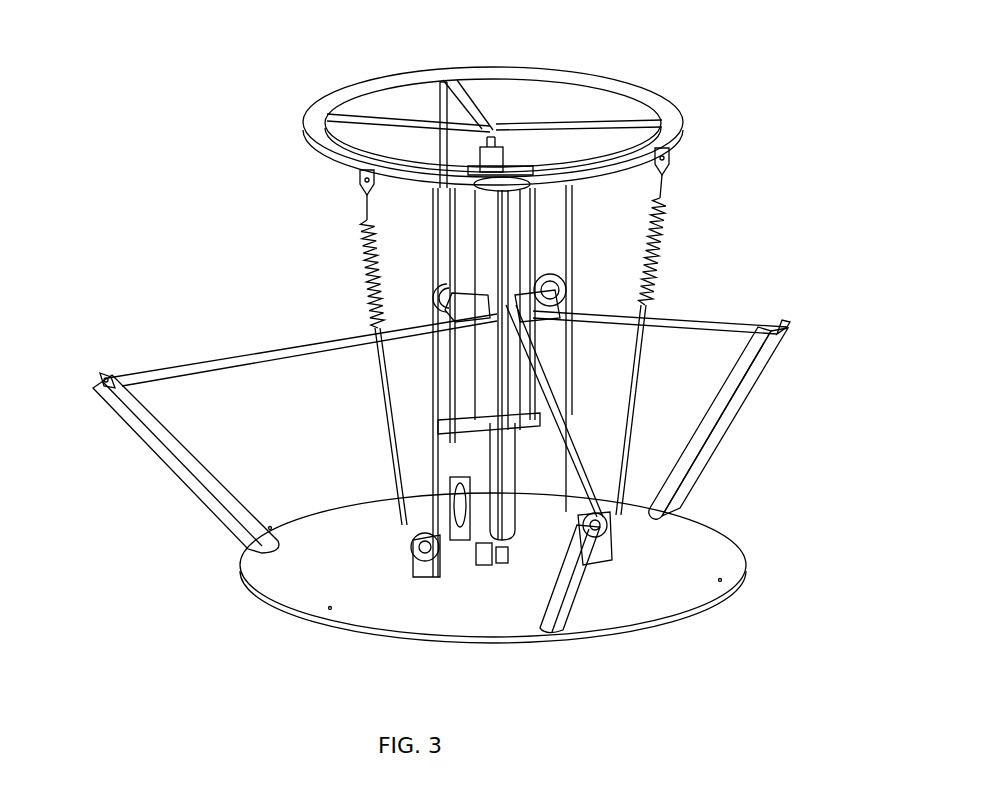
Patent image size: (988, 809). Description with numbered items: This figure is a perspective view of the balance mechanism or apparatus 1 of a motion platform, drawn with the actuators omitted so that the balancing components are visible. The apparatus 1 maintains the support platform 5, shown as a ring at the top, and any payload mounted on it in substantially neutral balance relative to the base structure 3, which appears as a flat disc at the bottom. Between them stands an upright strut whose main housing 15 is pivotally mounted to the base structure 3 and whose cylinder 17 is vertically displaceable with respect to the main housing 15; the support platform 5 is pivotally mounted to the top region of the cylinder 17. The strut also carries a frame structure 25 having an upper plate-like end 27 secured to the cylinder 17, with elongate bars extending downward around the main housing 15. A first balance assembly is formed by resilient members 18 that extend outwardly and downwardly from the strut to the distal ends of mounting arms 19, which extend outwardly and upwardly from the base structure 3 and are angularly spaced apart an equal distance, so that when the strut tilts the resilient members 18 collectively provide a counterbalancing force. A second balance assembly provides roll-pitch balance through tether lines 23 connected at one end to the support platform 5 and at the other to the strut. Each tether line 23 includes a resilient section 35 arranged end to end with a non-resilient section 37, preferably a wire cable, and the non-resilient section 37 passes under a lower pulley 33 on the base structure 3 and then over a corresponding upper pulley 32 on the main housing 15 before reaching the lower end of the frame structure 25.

The balance mechanism or apparatus 1 is at (280, 162).
The base structure 3 is at (688, 543).
The support platform 5 is at (665, 96).
The main housing 15 is at (490, 462).
The cylinder 17 is at (462, 168).
The resilient members 18 is at (245, 356).
The mounting arms 19 is at (743, 405).
The tether lines 23 is at (360, 370).
The frame structure 25 is at (495, 378).
The upper plate-like end 27 is at (528, 162).
The upper pulleys 32 is at (562, 280).
The lower pulleys 33 is at (400, 570).
The resilient section 35 is at (362, 260).
The non-resilient section 37 is at (380, 405).